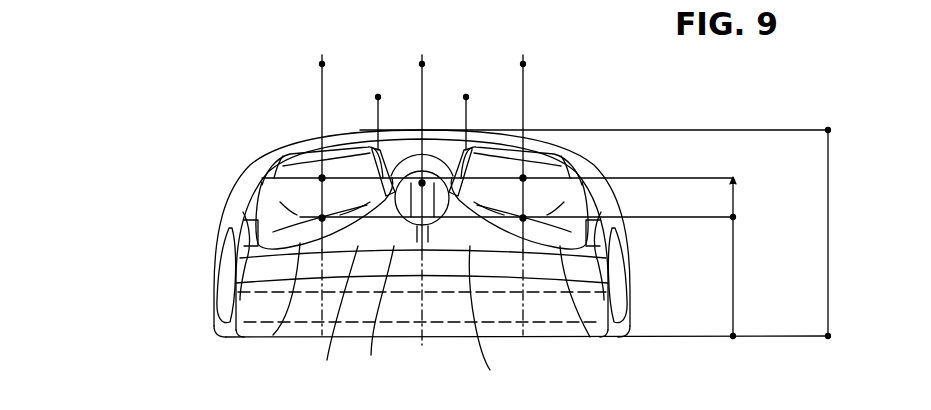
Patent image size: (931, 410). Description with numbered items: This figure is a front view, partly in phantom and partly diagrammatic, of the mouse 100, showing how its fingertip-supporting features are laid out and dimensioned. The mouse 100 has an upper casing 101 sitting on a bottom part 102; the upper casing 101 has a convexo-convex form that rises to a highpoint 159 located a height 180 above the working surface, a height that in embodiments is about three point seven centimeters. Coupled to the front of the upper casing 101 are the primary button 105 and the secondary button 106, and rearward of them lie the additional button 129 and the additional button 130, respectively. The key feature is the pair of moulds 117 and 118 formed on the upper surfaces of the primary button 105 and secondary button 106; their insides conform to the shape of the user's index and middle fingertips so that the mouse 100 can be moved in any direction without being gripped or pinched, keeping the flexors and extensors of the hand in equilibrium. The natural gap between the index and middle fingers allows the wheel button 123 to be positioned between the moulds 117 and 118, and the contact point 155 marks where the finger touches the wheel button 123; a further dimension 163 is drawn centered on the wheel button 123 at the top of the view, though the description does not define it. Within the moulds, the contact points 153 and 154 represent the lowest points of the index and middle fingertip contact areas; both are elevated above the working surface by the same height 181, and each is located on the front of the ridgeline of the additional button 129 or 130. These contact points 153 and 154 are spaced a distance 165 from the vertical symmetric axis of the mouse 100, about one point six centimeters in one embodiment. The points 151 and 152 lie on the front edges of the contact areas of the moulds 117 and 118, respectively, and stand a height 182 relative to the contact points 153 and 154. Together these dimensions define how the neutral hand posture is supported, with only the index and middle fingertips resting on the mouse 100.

The mouse 100 is at (122, 221).
The upper casing 101 is at (225, 210).
The bottom part 102 is at (253, 305).
The primary button 105 is at (490, 370).
The secondary button 106 is at (327, 360).
The mould 117 is at (590, 337).
The mould 118 is at (273, 335).
The wheel button 123 is at (371, 355).
The additional button 129 is at (567, 129).
The additional button 130 is at (302, 150).
The front edge 151 is at (600, 175).
The front edge 152 is at (262, 200).
The contact point 153 is at (612, 235).
The contact point 154 is at (240, 240).
The contact point 155 is at (378, 142).
The highpoint 159 is at (490, 122).
The central pivot width 163 is at (466, 97).
The distance 165 is at (523, 64).
The height 180 is at (850, 246).
The height 181 is at (753, 289).
The height 182 is at (753, 209).